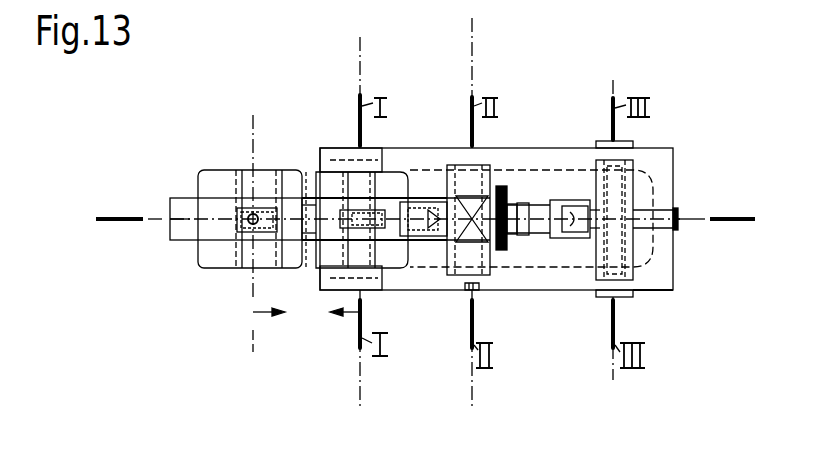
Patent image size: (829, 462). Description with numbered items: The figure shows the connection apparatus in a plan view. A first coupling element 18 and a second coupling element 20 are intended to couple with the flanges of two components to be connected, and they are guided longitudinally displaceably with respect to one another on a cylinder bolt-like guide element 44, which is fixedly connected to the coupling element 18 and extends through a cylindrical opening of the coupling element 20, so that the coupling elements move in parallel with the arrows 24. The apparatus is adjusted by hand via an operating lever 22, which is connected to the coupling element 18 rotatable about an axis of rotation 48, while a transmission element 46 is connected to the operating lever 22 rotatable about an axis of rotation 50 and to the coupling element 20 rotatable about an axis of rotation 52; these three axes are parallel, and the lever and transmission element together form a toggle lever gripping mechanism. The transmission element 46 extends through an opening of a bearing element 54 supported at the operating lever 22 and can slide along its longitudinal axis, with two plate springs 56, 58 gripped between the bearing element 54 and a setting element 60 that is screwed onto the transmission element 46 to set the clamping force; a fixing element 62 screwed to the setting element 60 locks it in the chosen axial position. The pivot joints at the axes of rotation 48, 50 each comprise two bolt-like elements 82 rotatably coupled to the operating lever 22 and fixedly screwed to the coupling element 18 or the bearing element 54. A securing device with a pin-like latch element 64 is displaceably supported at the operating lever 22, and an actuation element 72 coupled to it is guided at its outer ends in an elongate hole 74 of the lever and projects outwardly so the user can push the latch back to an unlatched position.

The first coupling element 18 is at (324, 185).
The second coupling element 20 is at (212, 182).
The operating lever 22 is at (674, 148).
The arrows 24 is at (252, 312).
The guide element 44 is at (181, 212).
The transmission element 46 is at (306, 178).
The axis of rotation 48 is at (362, 50).
The axis of rotation 50 is at (473, 33).
The axis of rotation 52 is at (253, 153).
The bearing element 54 is at (497, 175).
The spring element 56 is at (500, 250).
The spring element 58 is at (508, 243).
The setting element 60 is at (562, 243).
The fixing element 62 is at (565, 185).
The latch element 64 is at (647, 180).
The actuation element 72 is at (622, 298).
The elongate hole 74 is at (645, 290).
The bolt-like elements 82 is at (457, 157).